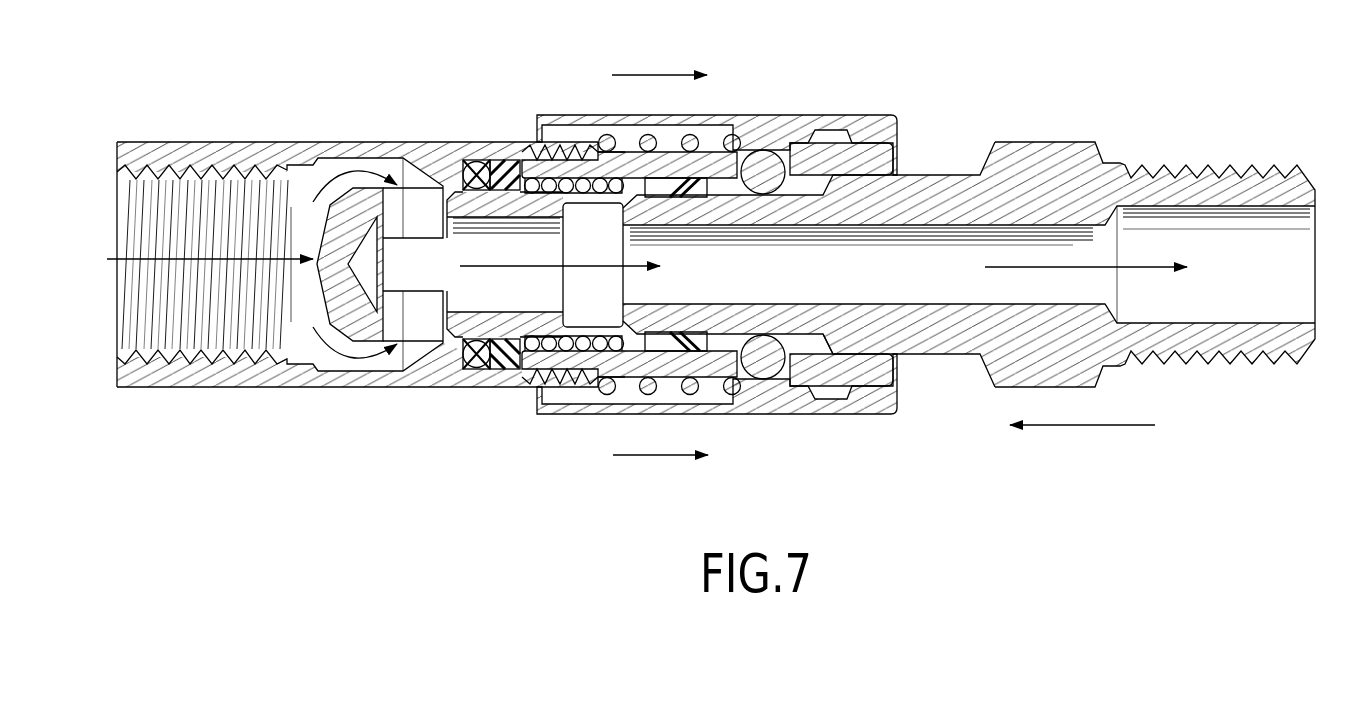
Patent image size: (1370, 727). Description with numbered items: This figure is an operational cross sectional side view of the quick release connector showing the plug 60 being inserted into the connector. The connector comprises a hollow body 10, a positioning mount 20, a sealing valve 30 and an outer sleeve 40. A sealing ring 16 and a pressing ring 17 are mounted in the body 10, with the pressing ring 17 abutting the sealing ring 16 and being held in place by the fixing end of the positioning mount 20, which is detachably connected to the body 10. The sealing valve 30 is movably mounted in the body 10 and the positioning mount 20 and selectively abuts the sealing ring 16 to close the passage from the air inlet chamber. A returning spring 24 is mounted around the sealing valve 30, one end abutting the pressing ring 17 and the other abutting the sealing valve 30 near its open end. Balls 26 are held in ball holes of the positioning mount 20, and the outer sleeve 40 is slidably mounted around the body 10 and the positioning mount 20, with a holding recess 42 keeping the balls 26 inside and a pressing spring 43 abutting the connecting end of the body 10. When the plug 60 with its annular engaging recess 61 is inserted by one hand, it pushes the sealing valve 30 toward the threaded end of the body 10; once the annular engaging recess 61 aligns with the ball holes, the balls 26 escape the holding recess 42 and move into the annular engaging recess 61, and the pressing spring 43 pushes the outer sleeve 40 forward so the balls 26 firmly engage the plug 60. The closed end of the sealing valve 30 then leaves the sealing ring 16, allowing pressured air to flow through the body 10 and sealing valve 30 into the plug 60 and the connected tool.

The body 10 is at (223, 139).
The sealing ring 16 is at (479, 165).
The pressing ring 17 is at (500, 362).
The positioning mount 20 is at (906, 159).
The returning spring 24 is at (587, 192).
The balls 26 is at (766, 355).
The sealing valve 30 is at (338, 340).
The outer sleeve 40 is at (764, 110).
The holding recess 42 is at (825, 137).
The pressing spring 43 is at (602, 137).
The plug 60 is at (1067, 136).
The annular engaging recess 61 is at (830, 352).